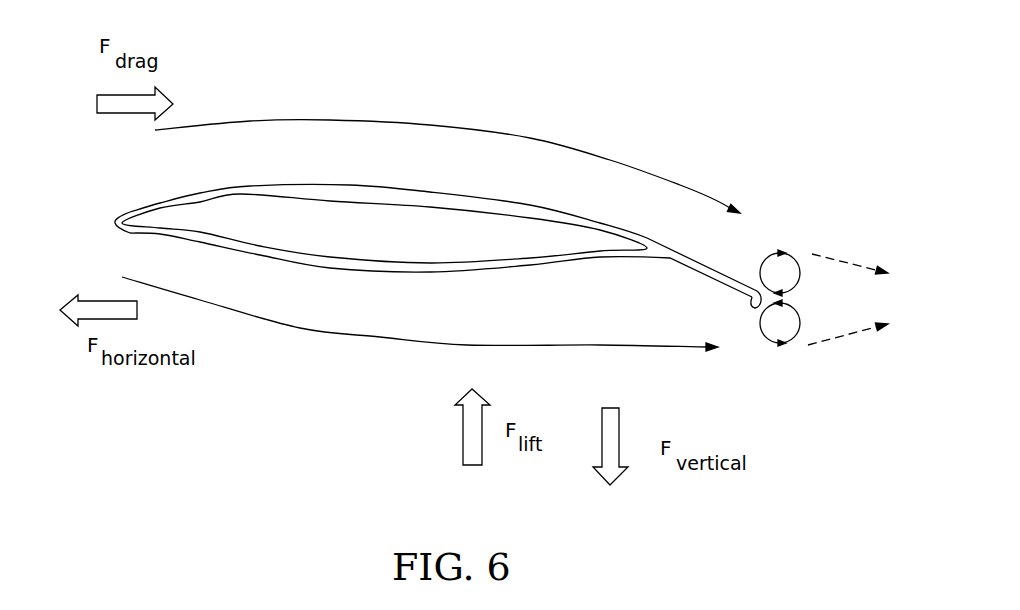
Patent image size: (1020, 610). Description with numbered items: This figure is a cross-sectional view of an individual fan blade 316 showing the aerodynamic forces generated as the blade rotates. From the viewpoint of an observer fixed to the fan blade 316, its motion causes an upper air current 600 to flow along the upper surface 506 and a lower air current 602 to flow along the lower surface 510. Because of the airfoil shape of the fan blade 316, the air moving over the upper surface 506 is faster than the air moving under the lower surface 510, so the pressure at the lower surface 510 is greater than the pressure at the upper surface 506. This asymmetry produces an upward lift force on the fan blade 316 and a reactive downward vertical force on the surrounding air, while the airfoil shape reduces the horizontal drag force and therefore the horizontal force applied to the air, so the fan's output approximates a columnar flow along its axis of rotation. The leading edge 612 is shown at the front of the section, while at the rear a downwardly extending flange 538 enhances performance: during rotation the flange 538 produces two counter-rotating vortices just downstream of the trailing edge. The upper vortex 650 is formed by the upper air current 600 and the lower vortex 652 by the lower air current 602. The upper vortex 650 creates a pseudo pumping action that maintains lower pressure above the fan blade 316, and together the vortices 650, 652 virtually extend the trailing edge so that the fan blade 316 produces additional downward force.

The fan blade 316 is at (409, 175).
The upper surface 506 is at (383, 188).
The lower surface 510 is at (483, 273).
The leading edge of blade 612 is at (113, 222).
The downwardly extending flange 538 is at (716, 299).
The upper air current 600 is at (330, 110).
The lower air current 602 is at (380, 338).
The upper vortex 650 is at (800, 215).
The lower vortex 652 is at (785, 372).